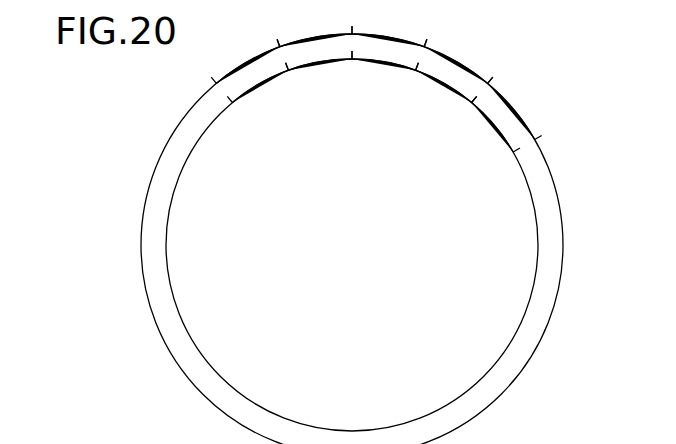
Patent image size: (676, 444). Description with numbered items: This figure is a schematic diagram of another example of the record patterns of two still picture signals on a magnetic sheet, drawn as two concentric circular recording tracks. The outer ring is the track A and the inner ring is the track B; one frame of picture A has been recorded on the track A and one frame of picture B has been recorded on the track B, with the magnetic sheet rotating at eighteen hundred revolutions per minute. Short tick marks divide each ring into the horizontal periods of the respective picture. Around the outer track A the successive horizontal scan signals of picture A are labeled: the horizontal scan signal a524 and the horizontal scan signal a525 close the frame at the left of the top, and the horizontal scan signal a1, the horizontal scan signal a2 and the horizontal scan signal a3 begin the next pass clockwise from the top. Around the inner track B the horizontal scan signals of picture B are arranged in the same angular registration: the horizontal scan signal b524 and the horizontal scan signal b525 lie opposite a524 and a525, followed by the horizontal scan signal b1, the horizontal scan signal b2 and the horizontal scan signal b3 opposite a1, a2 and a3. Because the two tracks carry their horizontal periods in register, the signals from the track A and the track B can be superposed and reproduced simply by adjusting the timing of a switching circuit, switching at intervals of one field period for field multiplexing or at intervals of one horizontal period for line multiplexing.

The track A is at (562, 231).
The track B is at (537, 237).
The horizontal scan signal a524 is at (245, 57).
The horizontal scan signal a525 is at (314, 28).
The horizontal scan signal a1 is at (389, 29).
The horizontal scan signal a2 is at (458, 60).
The horizontal scan signal a3 is at (515, 108).
The horizontal scan signal b524 is at (263, 96).
The horizontal scan signal b525 is at (319, 77).
The horizontal scan signal b1 is at (385, 76).
The horizontal scan signal b2 is at (446, 93).
The horizontal scan signal b3 is at (488, 127).